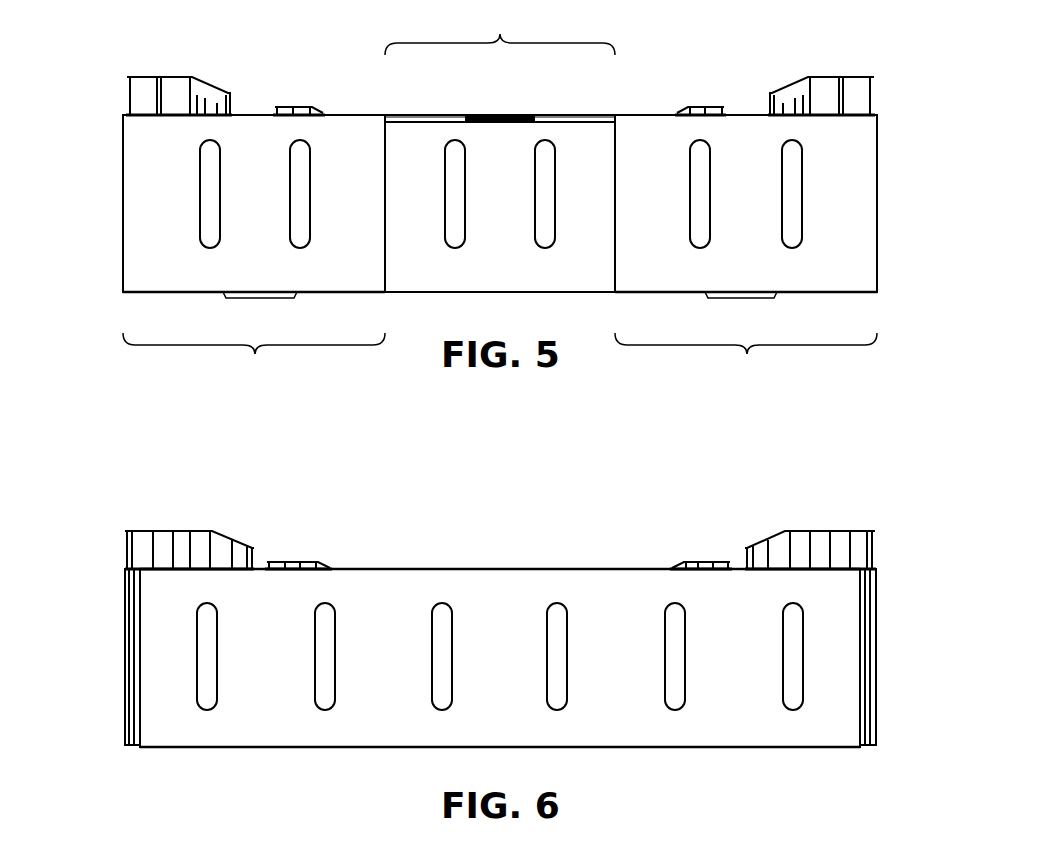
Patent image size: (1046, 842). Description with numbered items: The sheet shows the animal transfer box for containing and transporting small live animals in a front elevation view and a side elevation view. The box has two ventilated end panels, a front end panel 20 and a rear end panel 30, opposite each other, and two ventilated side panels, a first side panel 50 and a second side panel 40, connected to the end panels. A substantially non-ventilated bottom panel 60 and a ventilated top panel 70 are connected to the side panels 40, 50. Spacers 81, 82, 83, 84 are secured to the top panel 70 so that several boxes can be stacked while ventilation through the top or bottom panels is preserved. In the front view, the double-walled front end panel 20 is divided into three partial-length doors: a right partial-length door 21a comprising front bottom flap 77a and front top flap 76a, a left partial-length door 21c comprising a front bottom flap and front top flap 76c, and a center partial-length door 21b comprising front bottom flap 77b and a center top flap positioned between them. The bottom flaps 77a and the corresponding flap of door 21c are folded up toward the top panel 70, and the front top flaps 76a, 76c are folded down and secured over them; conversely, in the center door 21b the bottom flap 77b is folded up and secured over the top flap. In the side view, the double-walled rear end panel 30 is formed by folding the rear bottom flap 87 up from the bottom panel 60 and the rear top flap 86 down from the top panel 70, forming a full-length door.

In FIG. 5, the front end panel 20 is at (200, 264).
In FIG. 6, the front end panel 20 is at (890, 666).
In FIG. 5, the right partial-length door 21a is at (254, 360).
In FIG. 5, the center partial-length door 21b is at (500, 30).
In FIG. 5, the left partial-length door 21c is at (746, 360).
In FIG. 6, the rear end panel 30 is at (108, 666).
In FIG. 5, the second side panel 40 is at (893, 203).
In FIG. 5, the first side panel 50 is at (106, 203).
In FIG. 6, the first side panel 50 is at (508, 667).
In FIG. 5, the bottom panel 60 is at (652, 300).
In FIG. 6, the bottom panel 60 is at (623, 760).
In FIG. 5, the top panel 70 is at (560, 102).
In FIG. 6, the top panel 70 is at (500, 538).
In FIG. 5, the front top flap 76a is at (278, 220).
In FIG. 6, the front top flap 76a is at (872, 750).
In FIG. 5, the front top flap 76c is at (768, 220).
In FIG. 6, the front bottom flap 77a is at (862, 750).
In FIG. 5, the front bottom flap 77b is at (524, 220).
In FIG. 5, the spacer 81 is at (290, 107).
In FIG. 6, the spacer 81 is at (147, 538).
In FIG. 5, the spacer 82 is at (150, 90).
In FIG. 6, the spacer 82 is at (858, 540).
In FIG. 5, the spacer 83 is at (852, 90).
In FIG. 6, the spacer 83 is at (690, 563).
In FIG. 5, the spacer 84 is at (716, 107).
In FIG. 6, the spacer 84 is at (297, 563).
In FIG. 6, the rear top flap 86 is at (125, 722).
In FIG. 6, the rear bottom flap 87 is at (135, 746).